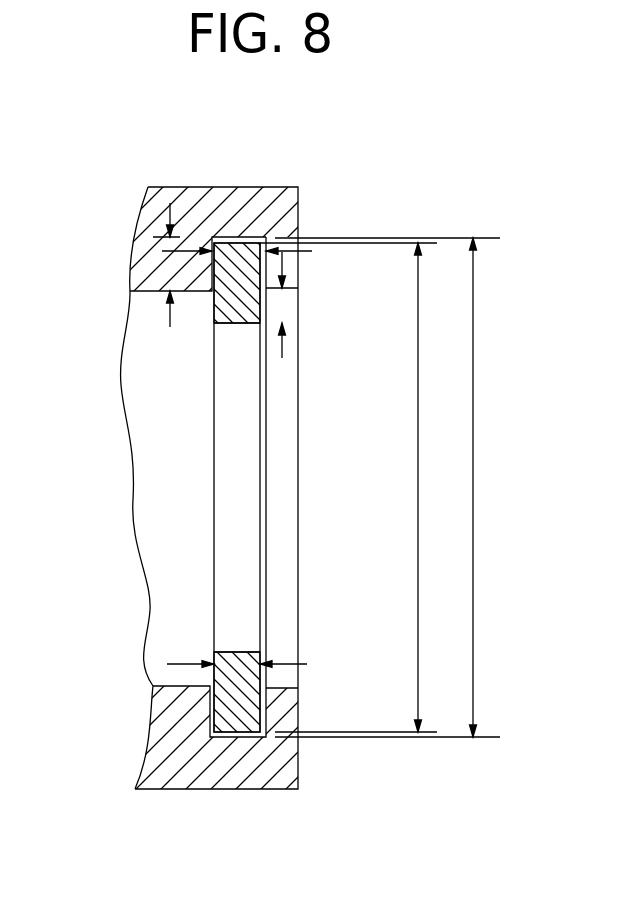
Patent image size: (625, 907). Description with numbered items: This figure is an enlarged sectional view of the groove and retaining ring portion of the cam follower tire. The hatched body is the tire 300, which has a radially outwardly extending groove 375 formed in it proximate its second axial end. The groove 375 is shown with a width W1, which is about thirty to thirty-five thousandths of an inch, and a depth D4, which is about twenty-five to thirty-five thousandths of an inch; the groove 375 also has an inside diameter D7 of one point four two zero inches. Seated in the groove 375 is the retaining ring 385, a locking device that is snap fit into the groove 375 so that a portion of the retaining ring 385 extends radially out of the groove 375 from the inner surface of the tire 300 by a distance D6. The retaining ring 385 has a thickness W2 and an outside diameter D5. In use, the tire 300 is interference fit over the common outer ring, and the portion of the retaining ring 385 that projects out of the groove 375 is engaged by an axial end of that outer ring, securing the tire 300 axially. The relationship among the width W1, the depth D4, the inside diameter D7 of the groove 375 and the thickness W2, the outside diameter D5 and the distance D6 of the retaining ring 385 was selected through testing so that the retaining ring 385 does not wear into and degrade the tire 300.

The tire 300 is at (272, 197).
The groove 375 is at (159, 426).
The retaining ring 385 is at (230, 310).
The depth of the groove D4 is at (168, 205).
The outside diameter of the retaining ring D5 is at (418, 440).
The distance the retaining ring extends from the inner surface D6 is at (282, 352).
The inside diameter of the groove D7 is at (473, 405).
The width of the groove W1 is at (198, 250).
The thickness of the retaining ring W2 is at (290, 664).